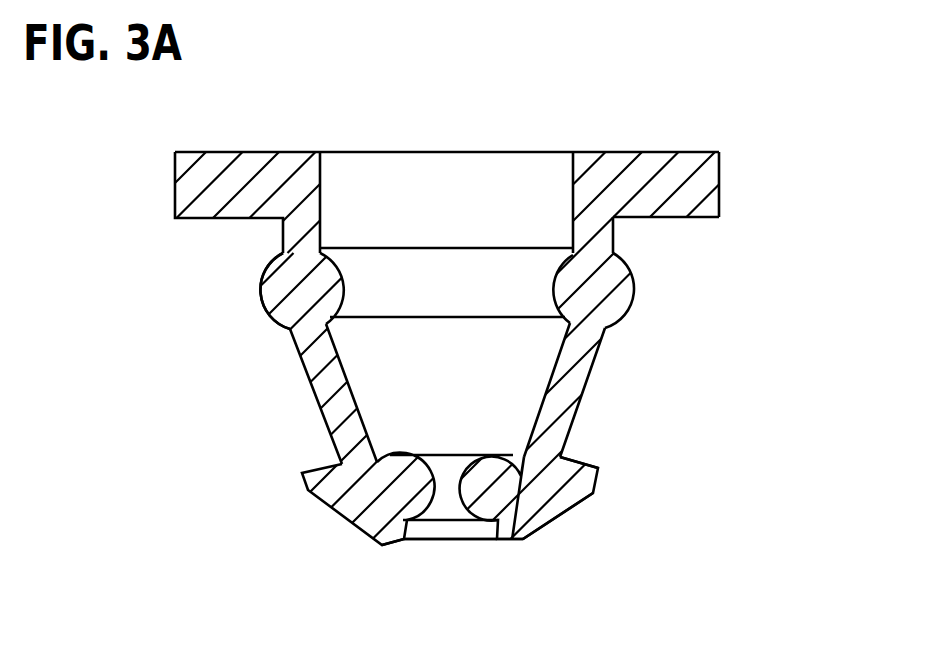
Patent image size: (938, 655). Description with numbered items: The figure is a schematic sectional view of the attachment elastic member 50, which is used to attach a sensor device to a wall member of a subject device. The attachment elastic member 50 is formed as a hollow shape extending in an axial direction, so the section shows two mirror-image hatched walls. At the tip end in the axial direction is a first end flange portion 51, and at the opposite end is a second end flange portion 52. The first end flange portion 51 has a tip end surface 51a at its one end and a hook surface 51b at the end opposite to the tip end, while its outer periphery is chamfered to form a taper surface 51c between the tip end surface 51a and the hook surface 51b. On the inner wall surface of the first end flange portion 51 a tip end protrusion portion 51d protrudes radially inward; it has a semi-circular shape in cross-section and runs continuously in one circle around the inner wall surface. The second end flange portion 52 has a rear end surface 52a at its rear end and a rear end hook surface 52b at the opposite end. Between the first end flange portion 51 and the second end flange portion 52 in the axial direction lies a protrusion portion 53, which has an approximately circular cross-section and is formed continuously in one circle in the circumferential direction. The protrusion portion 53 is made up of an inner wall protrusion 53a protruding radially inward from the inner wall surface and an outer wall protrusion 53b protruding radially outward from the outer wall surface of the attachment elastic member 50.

The attachment elastic member 50 is at (467, 343).
The first end flange portion 51 is at (563, 495).
The tip end surface 51a is at (507, 540).
The hook surface 51b is at (593, 467).
The taper surface 51c is at (557, 520).
The tip end protrusion portion 51d is at (465, 485).
The second end flange portion 52 is at (710, 182).
The rear end surface 52a is at (668, 151).
The rear end hook surface 52b is at (670, 218).
The protrusion portion 53 is at (307, 297).
The inner wall protrusion 53a is at (310, 346).
The outer wall protrusion 53b is at (263, 284).